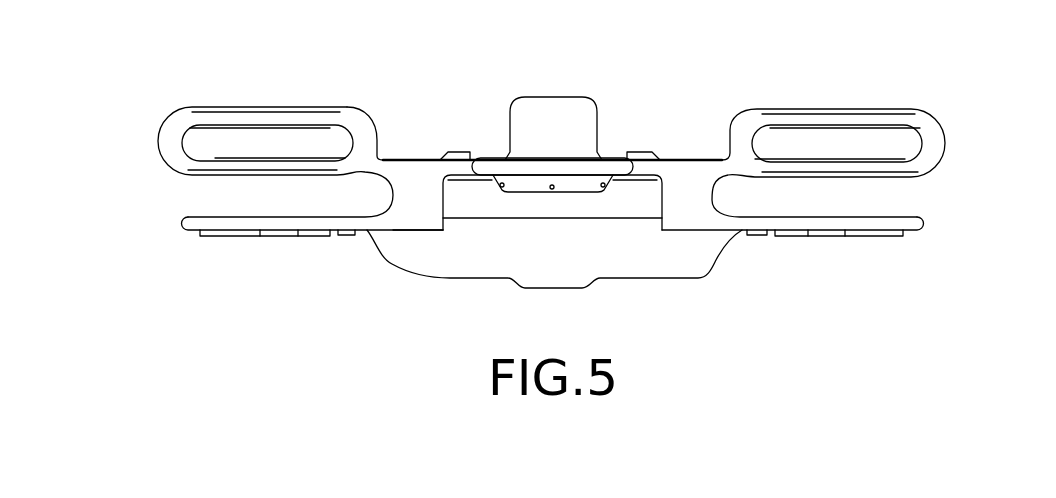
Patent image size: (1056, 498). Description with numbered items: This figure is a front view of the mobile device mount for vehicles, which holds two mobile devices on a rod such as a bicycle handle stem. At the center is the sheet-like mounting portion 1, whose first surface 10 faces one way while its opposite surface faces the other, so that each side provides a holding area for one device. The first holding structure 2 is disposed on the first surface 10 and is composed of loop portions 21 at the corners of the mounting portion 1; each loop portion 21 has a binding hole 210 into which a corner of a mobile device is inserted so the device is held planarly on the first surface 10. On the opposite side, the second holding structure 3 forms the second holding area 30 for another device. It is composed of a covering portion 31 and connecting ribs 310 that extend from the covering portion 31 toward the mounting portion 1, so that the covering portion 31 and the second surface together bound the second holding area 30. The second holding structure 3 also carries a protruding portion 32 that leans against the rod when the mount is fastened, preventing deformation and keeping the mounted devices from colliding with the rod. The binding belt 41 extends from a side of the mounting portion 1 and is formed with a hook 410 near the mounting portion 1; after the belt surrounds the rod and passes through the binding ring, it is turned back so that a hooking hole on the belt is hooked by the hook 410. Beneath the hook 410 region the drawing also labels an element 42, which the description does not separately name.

The mounting portion 1 is at (673, 168).
The first surface 10 is at (422, 150).
The first holding structure 2 is at (877, 122).
The loop portion 21 is at (932, 148).
The binding hole 210 is at (860, 141).
The second holding structure 3 is at (509, 270).
The second holding area 30 is at (363, 196).
The covering portion 31 is at (240, 227).
The protruding portion 32 is at (407, 255).
The connecting rib 310 is at (420, 205).
The binding belt 41 is at (567, 165).
The slider plate 42 is at (538, 187).
The hook 410 is at (553, 110).